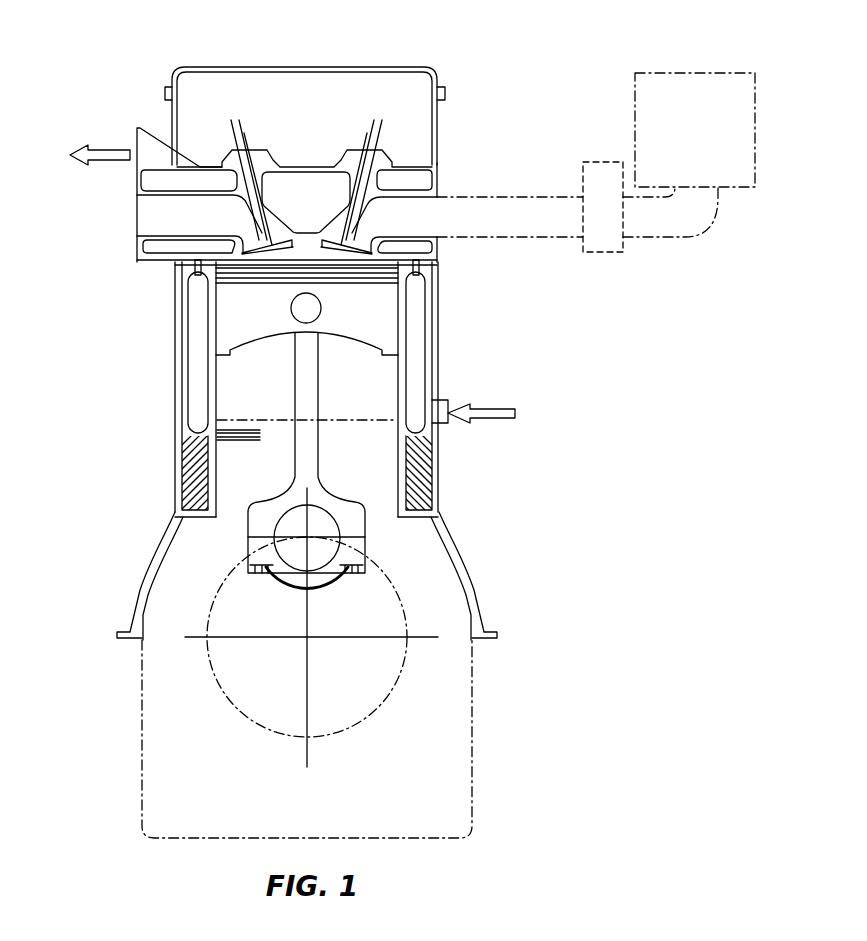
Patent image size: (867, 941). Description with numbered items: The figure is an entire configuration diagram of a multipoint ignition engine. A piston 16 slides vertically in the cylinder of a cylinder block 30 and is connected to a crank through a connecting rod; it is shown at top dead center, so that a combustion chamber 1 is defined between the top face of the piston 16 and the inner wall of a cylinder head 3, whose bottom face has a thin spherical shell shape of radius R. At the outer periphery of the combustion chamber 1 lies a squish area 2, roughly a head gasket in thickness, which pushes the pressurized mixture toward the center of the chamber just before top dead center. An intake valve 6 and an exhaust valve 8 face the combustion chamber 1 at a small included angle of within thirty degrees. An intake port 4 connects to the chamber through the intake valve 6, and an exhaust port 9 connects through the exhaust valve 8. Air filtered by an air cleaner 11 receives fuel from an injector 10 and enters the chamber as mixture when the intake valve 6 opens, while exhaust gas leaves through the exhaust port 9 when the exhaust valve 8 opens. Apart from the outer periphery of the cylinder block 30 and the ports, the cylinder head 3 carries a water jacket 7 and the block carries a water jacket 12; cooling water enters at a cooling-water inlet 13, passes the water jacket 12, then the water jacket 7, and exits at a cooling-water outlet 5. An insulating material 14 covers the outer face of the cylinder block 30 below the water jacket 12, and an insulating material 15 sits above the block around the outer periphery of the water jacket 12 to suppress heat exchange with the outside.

The combustion chamber 1 is at (288, 257).
The squish area 2 is at (220, 267).
The cylinder head 3 is at (133, 247).
The intake port 4 is at (432, 208).
The cooling-water outlet 5 is at (143, 152).
The intake valve 6 is at (350, 207).
The water jacket 7 is at (318, 183).
The exhaust valve 8 is at (278, 208).
The exhaust port 9 is at (145, 211).
The injector 10 is at (585, 162).
The air cleaner 11 is at (668, 80).
The water jacket 12 is at (417, 333).
The cooling-water inlet 13 is at (445, 408).
The insulating material 14 is at (190, 453).
The insulating material 15 is at (177, 397).
The piston 16 is at (242, 325).
The cylinder block 30 is at (210, 460).